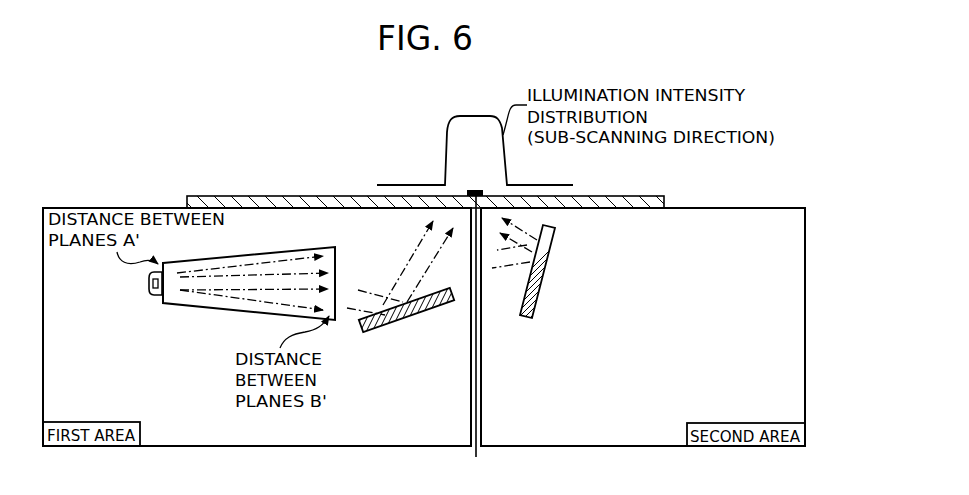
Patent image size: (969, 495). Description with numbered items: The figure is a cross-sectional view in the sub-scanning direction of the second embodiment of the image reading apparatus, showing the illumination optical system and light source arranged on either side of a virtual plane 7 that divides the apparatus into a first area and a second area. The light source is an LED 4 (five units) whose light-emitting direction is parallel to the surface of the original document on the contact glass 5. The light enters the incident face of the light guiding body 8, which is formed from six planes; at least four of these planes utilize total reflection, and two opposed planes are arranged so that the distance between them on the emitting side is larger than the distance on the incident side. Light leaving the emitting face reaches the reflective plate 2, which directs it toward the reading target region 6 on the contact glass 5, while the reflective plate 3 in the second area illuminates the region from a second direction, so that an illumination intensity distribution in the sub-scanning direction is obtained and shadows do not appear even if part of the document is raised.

The reflective plate 2 is at (404, 322).
The reflective plate 3 is at (548, 285).
The LED 4 is at (155, 297).
The contact glass 5 is at (340, 196).
The reading target region 6 is at (483, 192).
The virtual plane 7 is at (477, 338).
The light guiding body 8 is at (240, 311).